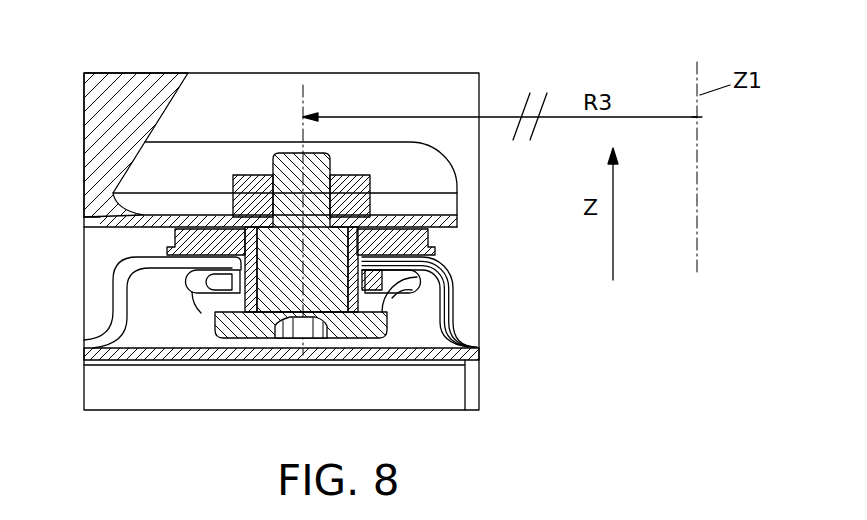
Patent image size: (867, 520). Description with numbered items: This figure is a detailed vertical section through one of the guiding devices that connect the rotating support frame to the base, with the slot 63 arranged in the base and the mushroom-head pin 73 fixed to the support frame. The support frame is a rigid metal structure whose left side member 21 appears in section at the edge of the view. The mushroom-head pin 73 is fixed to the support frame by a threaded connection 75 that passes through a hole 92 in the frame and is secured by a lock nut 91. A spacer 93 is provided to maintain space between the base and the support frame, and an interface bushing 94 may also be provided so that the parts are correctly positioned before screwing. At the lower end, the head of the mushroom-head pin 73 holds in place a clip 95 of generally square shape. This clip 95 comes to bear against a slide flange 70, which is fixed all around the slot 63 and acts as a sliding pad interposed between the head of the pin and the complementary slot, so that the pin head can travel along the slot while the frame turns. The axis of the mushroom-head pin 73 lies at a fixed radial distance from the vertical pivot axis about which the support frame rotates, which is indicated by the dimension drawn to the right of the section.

The left side member 21 is at (133, 228).
The slot 63 is at (200, 276).
The slide flange 70 is at (162, 302).
The mushroom-head pin 73 is at (245, 328).
The threaded connection 75 is at (322, 160).
The lock nut 91 is at (250, 175).
The hole 92 is at (375, 212).
The spacer 93 is at (420, 238).
The interface bushing 94 is at (440, 285).
The clip 95 is at (397, 293).